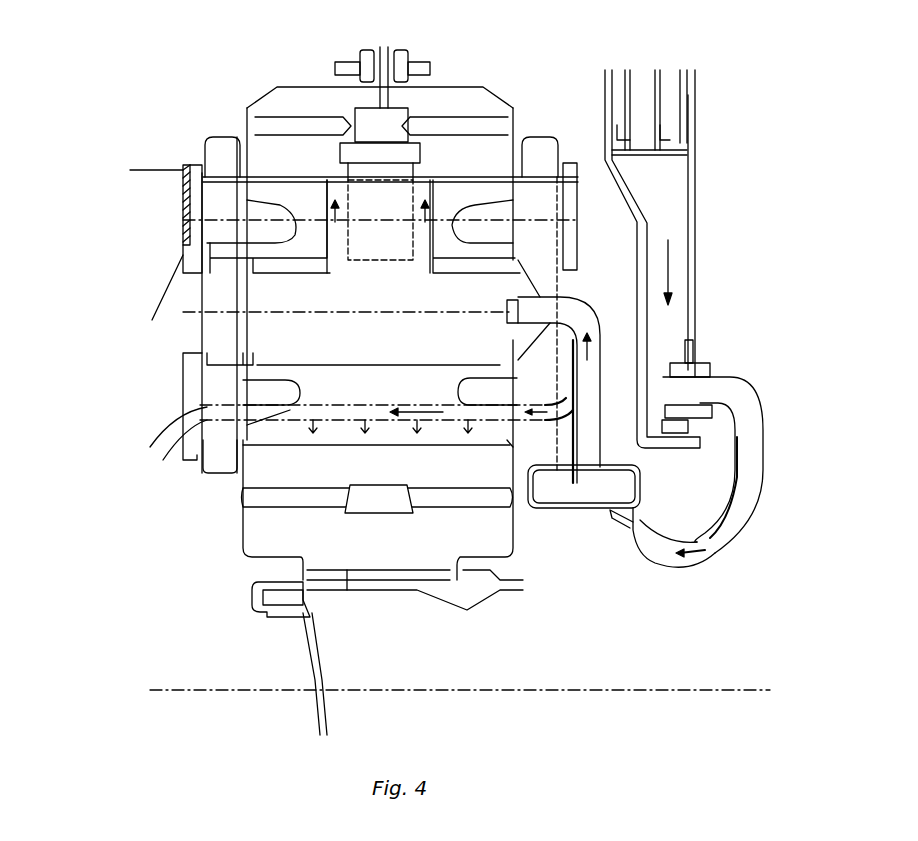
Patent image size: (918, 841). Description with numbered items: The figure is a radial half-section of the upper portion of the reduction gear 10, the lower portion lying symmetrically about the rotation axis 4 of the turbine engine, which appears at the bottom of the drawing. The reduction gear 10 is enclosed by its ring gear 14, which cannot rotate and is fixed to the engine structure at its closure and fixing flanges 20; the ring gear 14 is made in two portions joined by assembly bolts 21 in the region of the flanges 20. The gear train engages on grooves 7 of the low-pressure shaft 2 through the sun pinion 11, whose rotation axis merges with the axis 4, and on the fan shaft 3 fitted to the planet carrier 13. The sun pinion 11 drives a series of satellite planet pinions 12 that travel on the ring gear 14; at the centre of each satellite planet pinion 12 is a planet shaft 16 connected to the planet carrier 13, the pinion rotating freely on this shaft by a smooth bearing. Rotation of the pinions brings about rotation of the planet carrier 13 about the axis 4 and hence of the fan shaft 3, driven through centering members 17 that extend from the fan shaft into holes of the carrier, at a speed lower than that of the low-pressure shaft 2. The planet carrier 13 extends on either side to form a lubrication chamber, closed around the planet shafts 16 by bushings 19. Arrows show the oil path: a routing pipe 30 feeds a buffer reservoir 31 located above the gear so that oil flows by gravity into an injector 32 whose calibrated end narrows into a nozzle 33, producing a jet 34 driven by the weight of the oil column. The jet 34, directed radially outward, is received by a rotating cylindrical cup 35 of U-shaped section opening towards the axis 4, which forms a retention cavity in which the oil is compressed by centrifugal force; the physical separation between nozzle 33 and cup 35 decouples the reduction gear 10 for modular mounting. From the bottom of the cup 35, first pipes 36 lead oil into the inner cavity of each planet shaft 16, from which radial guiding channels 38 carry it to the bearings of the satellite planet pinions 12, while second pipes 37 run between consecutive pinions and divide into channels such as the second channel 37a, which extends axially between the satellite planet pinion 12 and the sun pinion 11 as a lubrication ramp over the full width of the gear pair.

The reduction gear 10 is at (243, 43).
The fan shaft 3 is at (155, 187).
The ring gear 14 is at (487, 100).
The closure and fixing flanges 20 is at (378, 48).
The assembly bolts 21 is at (420, 62).
The centering members 17 is at (270, 157).
The satellite planet pinions 12 is at (497, 147).
The planet carrier 13 is at (220, 153).
The bushings 19 is at (577, 207).
The guiding channels 38 is at (335, 277).
The planet shaft 16 is at (287, 245).
The second channel 37a is at (337, 403).
The first pipes 36 is at (582, 300).
The second pipes 37 is at (573, 390).
The cylindrical cup 35 is at (643, 485).
The jet 34 is at (617, 527).
The nozzle 33 is at (633, 550).
The injector 32 is at (743, 447).
The routing pipe 30 is at (668, 92).
The buffer reservoir 31 is at (672, 212).
The sun pinion 11 is at (258, 533).
The grooves 7 is at (355, 590).
The low-pressure shaft 2 is at (477, 597).
The rotation axis 4 is at (415, 687).